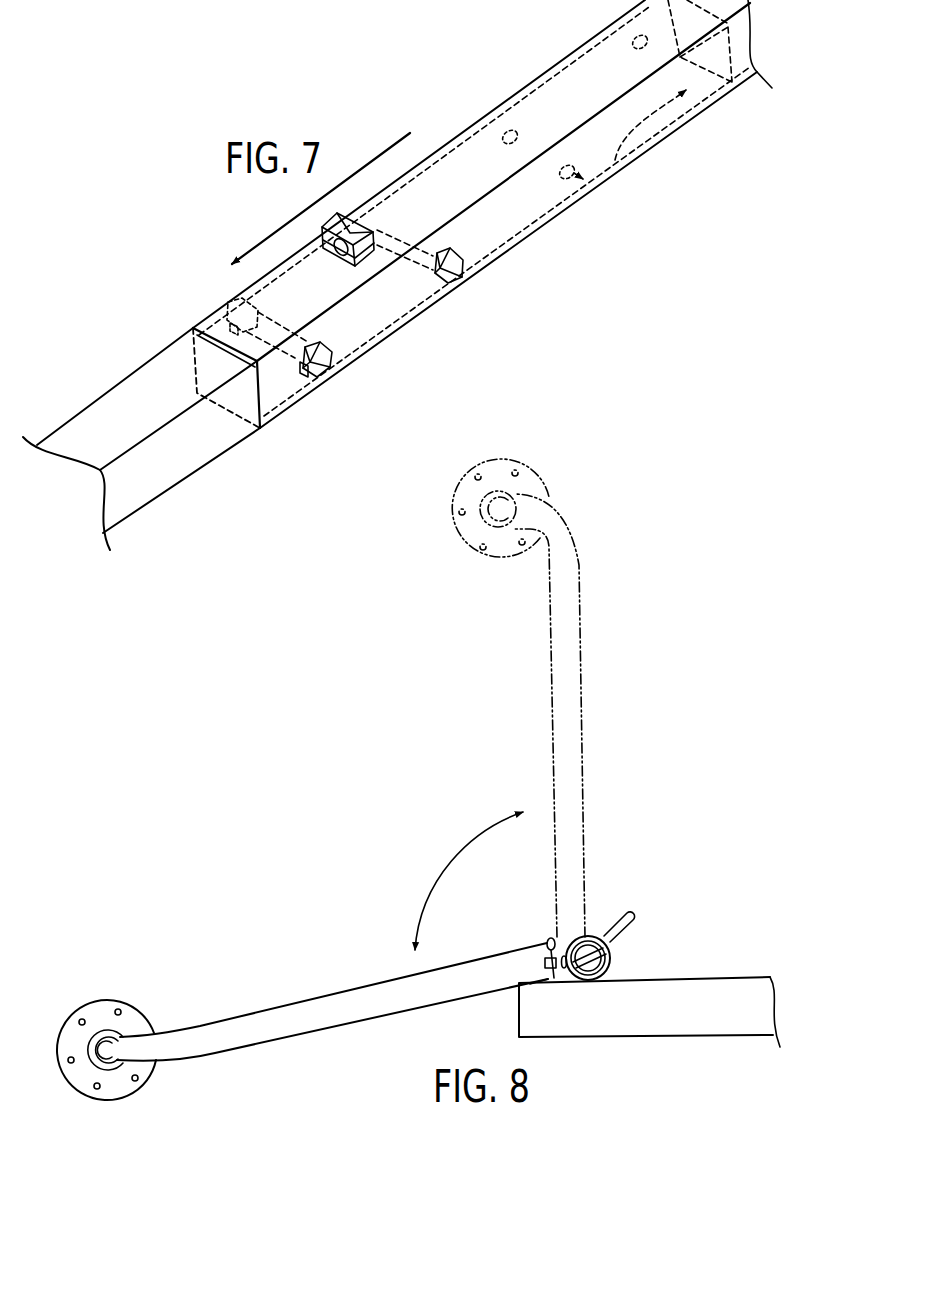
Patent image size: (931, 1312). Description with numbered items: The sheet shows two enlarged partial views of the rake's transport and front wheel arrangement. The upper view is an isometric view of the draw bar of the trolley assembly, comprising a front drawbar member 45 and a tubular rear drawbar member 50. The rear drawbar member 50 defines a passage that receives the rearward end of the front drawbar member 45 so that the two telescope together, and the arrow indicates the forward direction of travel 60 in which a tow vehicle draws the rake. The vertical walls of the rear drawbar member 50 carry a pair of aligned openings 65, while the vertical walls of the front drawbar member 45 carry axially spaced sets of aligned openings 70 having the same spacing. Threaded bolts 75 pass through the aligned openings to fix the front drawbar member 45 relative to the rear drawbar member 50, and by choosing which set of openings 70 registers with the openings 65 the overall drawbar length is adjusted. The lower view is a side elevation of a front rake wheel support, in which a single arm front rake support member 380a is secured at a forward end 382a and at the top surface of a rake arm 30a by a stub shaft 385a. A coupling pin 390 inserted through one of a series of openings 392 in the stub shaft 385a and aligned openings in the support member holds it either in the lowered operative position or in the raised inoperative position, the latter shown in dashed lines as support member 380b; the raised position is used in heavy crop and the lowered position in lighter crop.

In FIG. 7, the front drawbar member 45 is at (108, 384).
In FIG. 7, the rear drawbar member 50 is at (550, 68).
In FIG. 7, the forward direction of travel 60 is at (374, 157).
In FIG. 7, the aligned openings 65 is at (301, 380).
In FIG. 7, the aligned openings 70 is at (616, 183).
In FIG. 7, the threaded bolts 75 is at (335, 373).
In FIG. 8, the front rake support member 380a is at (233, 1019).
In FIG. 8, the front rake support member 380b is at (583, 632).
In FIG. 8, the stub shaft 385a is at (589, 935).
In FIG. 8, the coupling pin 390 is at (629, 935).
In FIG. 8, the rake arm 30a is at (717, 977).
In FIG. 8, the openings 392 is at (565, 977).
In FIG. 8, the forward end 382a is at (538, 1052).